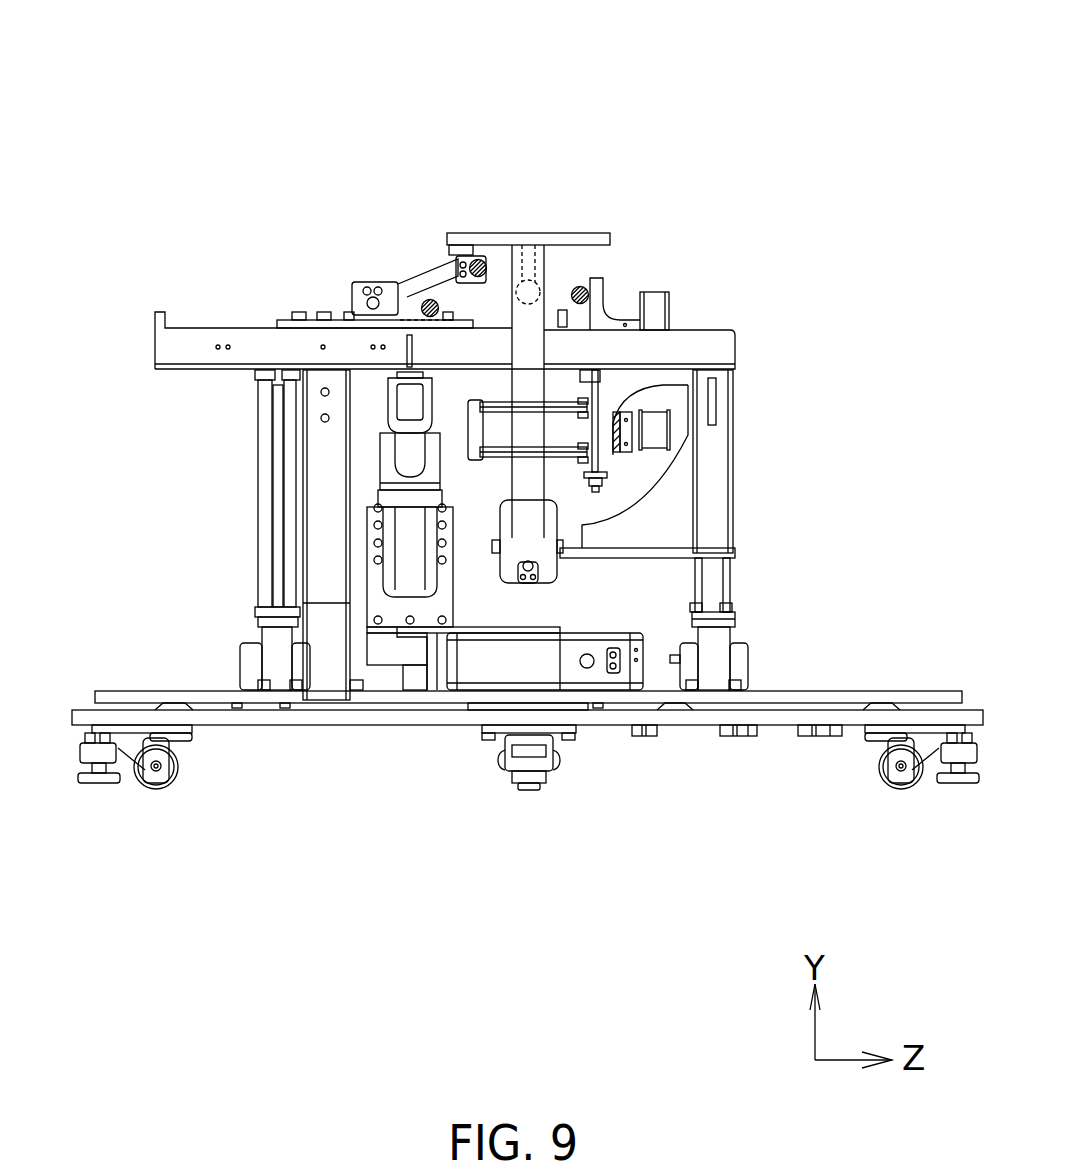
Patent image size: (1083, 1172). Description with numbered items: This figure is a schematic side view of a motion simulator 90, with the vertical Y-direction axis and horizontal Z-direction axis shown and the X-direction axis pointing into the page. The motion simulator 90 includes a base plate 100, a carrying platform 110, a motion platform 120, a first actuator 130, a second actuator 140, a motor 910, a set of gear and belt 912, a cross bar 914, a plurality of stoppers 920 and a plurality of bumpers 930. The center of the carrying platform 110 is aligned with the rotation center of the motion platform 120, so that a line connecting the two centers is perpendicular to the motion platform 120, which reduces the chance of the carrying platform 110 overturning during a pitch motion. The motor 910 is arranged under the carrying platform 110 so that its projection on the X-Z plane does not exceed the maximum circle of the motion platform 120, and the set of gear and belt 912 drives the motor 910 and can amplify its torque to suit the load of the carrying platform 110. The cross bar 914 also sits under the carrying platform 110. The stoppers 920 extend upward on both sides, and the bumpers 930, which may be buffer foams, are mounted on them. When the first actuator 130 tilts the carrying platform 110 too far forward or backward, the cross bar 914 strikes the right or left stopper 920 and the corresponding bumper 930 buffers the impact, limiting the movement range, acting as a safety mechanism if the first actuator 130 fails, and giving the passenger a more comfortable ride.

The motion simulator 90 is at (763, 100).
The base plate 100 is at (282, 720).
The carrying platform 110 is at (530, 236).
The motion platform 120 is at (831, 694).
The first actuator 130 is at (384, 458).
The second actuator 140 is at (195, 350).
The motor 910 is at (553, 425).
The set of gear and belt 912 is at (670, 298).
The cross bar 914 is at (535, 305).
The stoppers 920 is at (387, 281).
The bumpers 930 is at (428, 299).